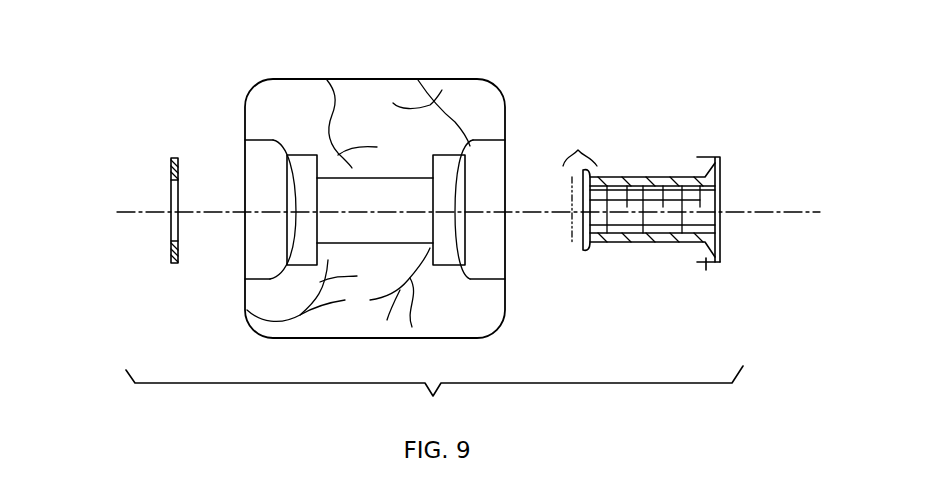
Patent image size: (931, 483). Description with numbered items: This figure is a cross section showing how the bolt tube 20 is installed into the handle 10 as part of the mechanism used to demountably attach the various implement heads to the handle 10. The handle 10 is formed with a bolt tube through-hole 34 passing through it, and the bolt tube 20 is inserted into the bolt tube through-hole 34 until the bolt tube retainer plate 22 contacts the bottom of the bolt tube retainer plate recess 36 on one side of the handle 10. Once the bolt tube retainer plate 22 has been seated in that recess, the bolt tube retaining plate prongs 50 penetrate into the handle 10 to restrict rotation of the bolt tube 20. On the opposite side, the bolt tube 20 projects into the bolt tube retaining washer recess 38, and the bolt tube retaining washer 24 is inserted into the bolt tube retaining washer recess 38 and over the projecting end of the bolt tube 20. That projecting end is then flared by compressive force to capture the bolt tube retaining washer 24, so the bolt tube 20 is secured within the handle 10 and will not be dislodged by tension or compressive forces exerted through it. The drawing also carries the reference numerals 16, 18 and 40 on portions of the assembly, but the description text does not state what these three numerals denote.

The handle 10 is at (370, 107).
The right end wall 16 is at (490, 172).
The left end wall 18 is at (253, 183).
The bolt tube 20 is at (640, 178).
The bolt tube retainer plate 22 is at (720, 163).
The bolt tube retaining washer 24 is at (172, 247).
The bolt tube through-hole 34 is at (327, 227).
The bolt tube retainer plate recess 36 is at (447, 252).
The bolt tube retaining washer recess 38 is at (300, 167).
The pin region 40 is at (580, 152).
The bolt tube retaining plate prongs 50 is at (706, 263).